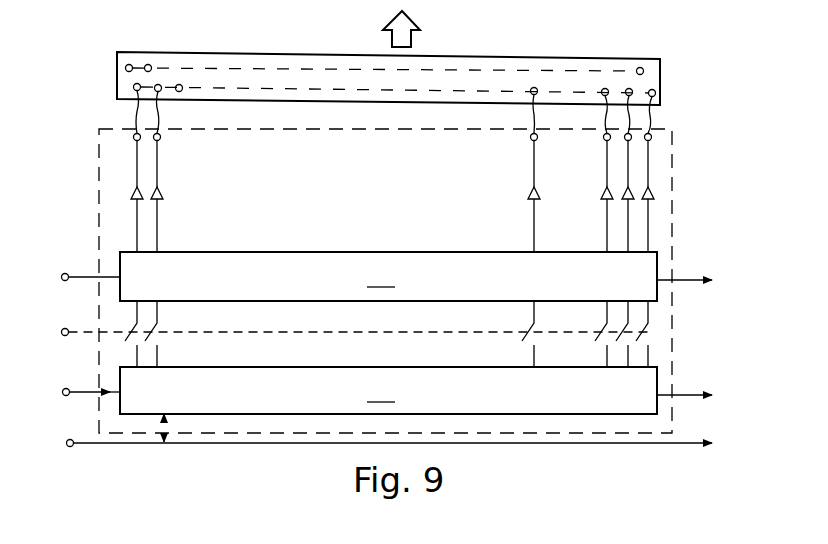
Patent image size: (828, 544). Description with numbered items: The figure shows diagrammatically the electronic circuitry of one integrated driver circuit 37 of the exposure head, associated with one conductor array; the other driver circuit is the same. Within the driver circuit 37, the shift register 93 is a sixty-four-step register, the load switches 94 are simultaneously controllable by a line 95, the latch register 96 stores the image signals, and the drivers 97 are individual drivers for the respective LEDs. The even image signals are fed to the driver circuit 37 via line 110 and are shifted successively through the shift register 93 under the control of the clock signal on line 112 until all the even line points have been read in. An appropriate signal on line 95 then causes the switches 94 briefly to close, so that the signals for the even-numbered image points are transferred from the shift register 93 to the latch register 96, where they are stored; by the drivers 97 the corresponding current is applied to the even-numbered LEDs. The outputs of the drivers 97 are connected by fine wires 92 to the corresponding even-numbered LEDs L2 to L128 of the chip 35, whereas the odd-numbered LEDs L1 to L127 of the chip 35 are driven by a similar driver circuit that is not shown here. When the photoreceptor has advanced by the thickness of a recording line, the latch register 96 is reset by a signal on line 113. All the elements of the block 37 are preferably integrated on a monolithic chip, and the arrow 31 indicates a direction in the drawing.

The direction arrow 31 is at (405, 32).
The chip 35 is at (289, 58).
The odd-numbered LED L1 is at (125, 68).
The even-numbered LED L2 is at (133, 88).
The odd-numbered LED L127 is at (643, 69).
The even-numbered LED L128 is at (656, 93).
The fine wires 92 is at (134, 117).
The driver circuit 37 is at (674, 210).
The drivers 97 is at (160, 200).
The latch register 96 is at (416, 276).
The line 113 is at (80, 274).
The line 95 is at (76, 330).
The load switches 94 is at (148, 334).
The shift register 93 is at (416, 390).
The line 110 is at (84, 396).
The line 112 is at (130, 446).